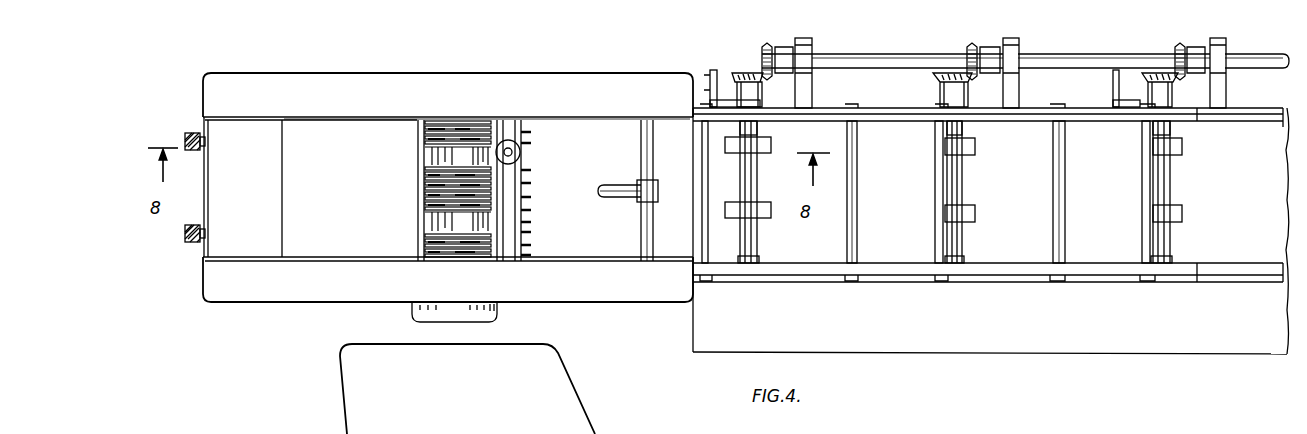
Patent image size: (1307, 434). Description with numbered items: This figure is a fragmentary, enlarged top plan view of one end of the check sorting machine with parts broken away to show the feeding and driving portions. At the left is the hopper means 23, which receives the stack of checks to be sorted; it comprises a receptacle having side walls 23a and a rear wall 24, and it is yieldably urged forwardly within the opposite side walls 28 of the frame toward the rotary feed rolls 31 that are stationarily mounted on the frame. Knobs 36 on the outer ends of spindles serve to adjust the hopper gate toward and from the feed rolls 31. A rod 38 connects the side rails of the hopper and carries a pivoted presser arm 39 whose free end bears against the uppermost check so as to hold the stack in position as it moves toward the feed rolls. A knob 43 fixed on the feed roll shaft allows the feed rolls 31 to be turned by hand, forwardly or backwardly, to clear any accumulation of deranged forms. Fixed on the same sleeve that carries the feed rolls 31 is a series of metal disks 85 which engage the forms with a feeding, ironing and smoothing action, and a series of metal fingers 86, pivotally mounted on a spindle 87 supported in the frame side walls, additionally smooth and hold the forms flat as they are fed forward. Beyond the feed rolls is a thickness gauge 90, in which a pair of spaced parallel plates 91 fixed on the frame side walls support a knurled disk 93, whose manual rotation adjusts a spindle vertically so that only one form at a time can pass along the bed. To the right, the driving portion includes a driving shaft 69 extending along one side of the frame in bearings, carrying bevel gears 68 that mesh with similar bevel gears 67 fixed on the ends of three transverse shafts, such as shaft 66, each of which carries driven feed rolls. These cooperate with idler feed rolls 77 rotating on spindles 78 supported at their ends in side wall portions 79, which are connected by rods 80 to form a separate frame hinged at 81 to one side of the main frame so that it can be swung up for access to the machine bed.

The hopper means 23 is at (327, 104).
The side walls 23a is at (386, 116).
The rear wall 24 is at (283, 210).
The side walls of the frame 28 is at (650, 90).
The rotary feed rolls 31 is at (418, 217).
The knobs 36 is at (193, 132).
The rod 38 is at (641, 151).
The presser arm 39 is at (612, 197).
The knob 43 is at (497, 311).
The shaft 66 is at (769, 93).
The bevel gears 67 is at (752, 73).
The gears 68 is at (765, 48).
The driving shaft 69 is at (1045, 66).
The idler feed roll 77 is at (770, 170).
The spindle 78 is at (749, 233).
The side wall portions 79 is at (1093, 124).
The rods 80 is at (857, 185).
The hinge 81 is at (710, 76).
The metal disks 85 is at (418, 183).
The metal fingers 86 is at (531, 196).
The spindle 87 is at (418, 160).
The thickness gauge 90 is at (548, 149).
The plates 91 is at (519, 216).
The knurled disk 93 is at (521, 155).